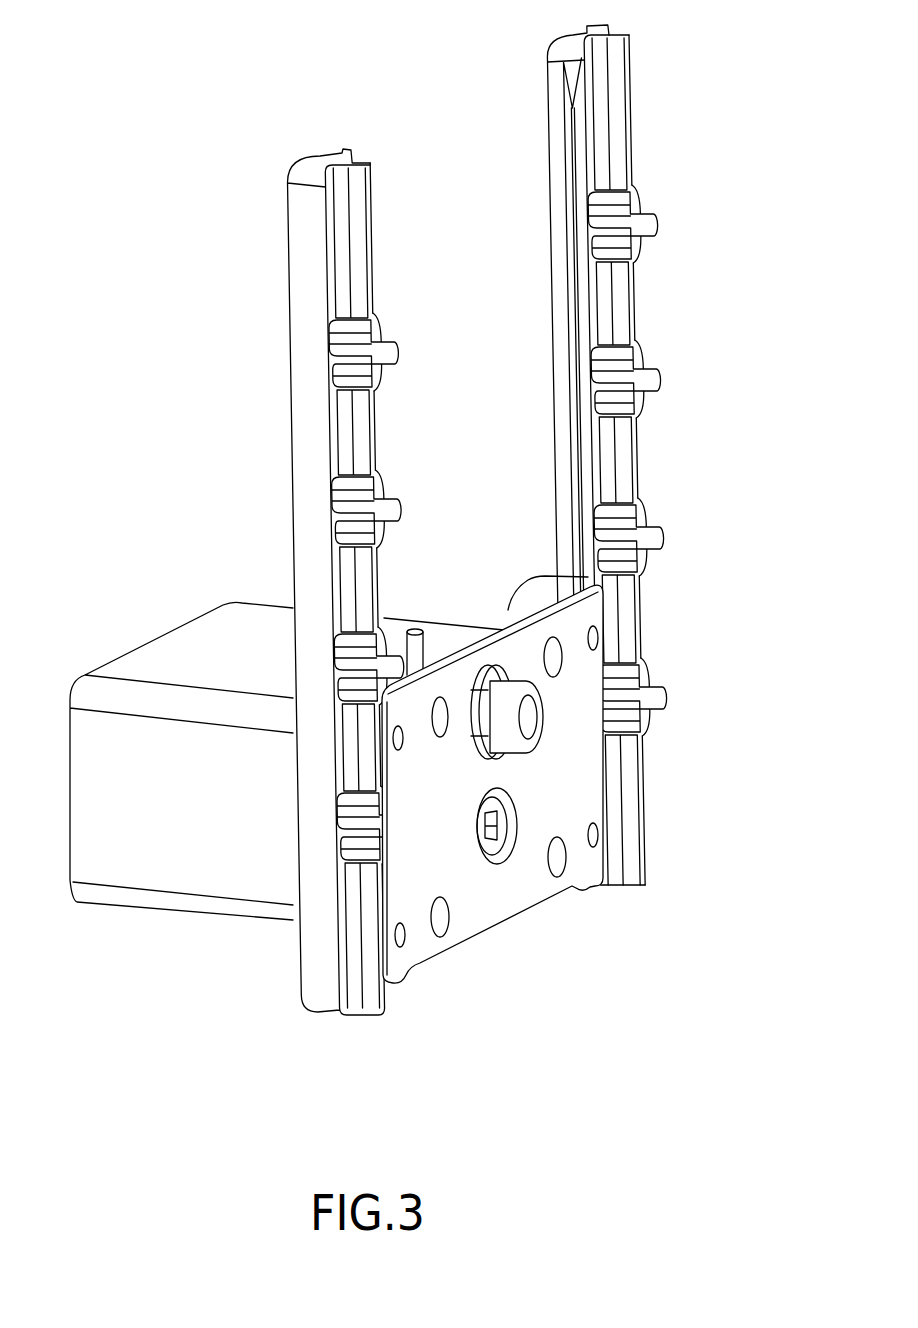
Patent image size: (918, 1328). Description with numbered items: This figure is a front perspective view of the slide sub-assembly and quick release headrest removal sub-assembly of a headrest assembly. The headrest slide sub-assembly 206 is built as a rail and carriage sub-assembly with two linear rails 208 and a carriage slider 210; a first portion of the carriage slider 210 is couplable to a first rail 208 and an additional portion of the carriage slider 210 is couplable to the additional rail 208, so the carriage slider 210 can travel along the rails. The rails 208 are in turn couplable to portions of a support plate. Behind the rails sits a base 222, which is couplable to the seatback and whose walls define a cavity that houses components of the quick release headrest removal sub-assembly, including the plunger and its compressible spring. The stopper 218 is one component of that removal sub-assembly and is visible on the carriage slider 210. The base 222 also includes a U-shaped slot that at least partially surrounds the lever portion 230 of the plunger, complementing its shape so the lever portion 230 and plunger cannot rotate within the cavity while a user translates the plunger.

The headrest slide sub-assembly 206 is at (411, 520).
The linear rail 208 is at (300, 222).
The carriage slider 210 is at (510, 906).
The stopper 218 is at (527, 716).
The base 222 is at (157, 652).
The lever portion 230 is at (418, 625).